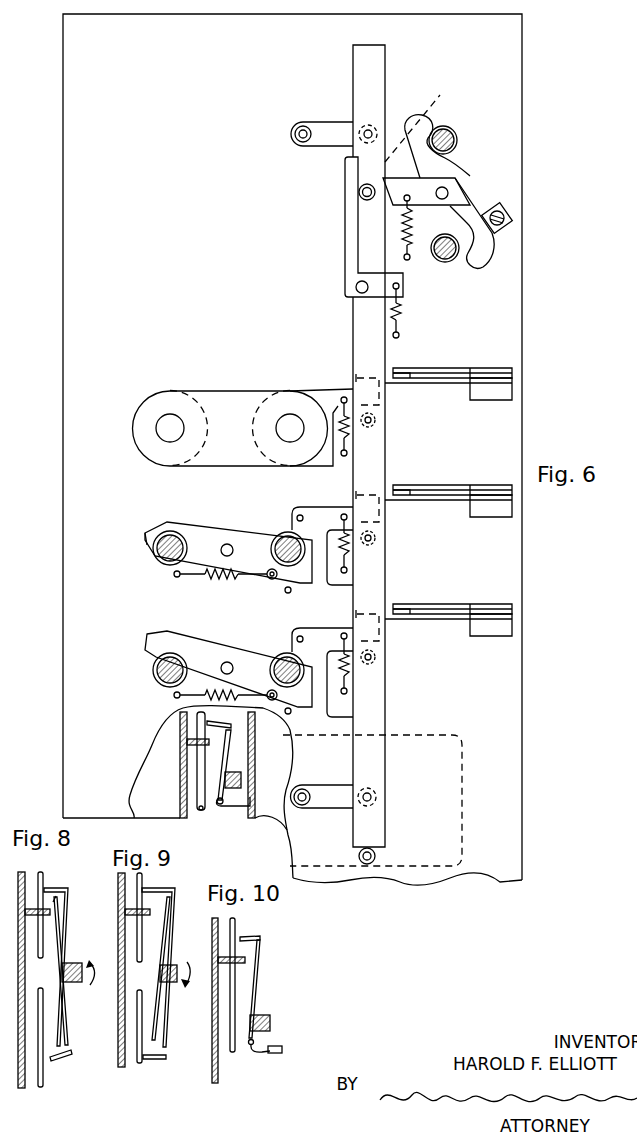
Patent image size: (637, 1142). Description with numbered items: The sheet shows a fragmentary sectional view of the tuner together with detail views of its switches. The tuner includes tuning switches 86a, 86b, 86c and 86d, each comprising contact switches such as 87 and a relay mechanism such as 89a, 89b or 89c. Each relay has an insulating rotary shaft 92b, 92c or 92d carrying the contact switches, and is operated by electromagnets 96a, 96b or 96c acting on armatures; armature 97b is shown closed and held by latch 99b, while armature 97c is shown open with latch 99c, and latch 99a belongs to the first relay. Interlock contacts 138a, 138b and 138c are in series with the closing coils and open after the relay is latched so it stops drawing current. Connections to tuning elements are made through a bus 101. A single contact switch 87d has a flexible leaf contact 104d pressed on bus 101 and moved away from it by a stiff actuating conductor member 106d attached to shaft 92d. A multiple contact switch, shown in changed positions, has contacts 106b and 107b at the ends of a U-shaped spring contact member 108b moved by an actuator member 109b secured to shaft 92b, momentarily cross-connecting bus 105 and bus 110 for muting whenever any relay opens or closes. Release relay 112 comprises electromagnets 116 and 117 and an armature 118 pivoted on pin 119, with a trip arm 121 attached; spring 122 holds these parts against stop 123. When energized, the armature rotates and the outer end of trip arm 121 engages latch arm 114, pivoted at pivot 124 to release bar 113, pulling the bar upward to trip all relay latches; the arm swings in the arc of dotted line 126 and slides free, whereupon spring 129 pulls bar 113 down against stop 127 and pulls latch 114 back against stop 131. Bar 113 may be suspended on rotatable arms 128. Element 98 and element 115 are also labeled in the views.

In FIG. 6, the release bar 113 is at (362, 62).
In FIG. 6, the rotatable arms 128 is at (322, 136).
In FIG. 6, the latch arm 114 is at (347, 167).
In FIG. 6, the stop 131 is at (358, 193).
In FIG. 6, the pivot 124 is at (355, 288).
In FIG. 6, the spring 129 is at (399, 323).
In FIG. 6, the release relay 112 is at (454, 173).
In FIG. 6, the pin 119 is at (448, 192).
In FIG. 6, the spring 122 is at (412, 249).
In FIG. 6, the electromagnet 116 is at (452, 133).
In FIG. 6, the electromagnet 117 is at (445, 262).
In FIG. 6, the trip arm 121 is at (407, 183).
In FIG. 6, the dotted line 126 is at (433, 94).
In FIG. 6, the armature 118 is at (484, 257).
In FIG. 6, the stop 123 is at (510, 220).
In FIG. 6, the electromagnet 96a is at (170, 425).
In FIG. 6, the relay mechanism 89a is at (258, 375).
In FIG. 6, the latch 99a is at (321, 448).
In FIG. 6, the tuning switch 86a is at (395, 432).
In FIG. 6, the interlock contacts 138a is at (452, 386).
In FIG. 6, the armature 97b is at (195, 528).
In FIG. 6, the insulating rotary shaft 92b is at (228, 543).
In FIG. 8, the insulating rotary shaft 92b is at (73, 962).
In FIG. 9, the insulating rotary shaft 92b is at (171, 984).
In FIG. 6, the electromagnet 96b is at (290, 543).
In FIG. 6, the lever end 98 is at (150, 532).
In FIG. 6, the relay mechanism 89b is at (246, 532).
In FIG. 6, the latch 99b is at (317, 563).
In FIG. 6, the tuning switch 86b is at (395, 552).
In FIG. 6, the interlock contacts 138b is at (450, 502).
In FIG. 6, the armature 97c is at (173, 647).
In FIG. 6, the insulating rotary shaft 92c is at (227, 662).
In FIG. 6, the electromagnet 96c is at (287, 662).
In FIG. 6, the relay mechanism 89c is at (240, 640).
In FIG. 6, the latch 99c is at (357, 714).
In FIG. 6, the tuning switch 86c is at (393, 672).
In FIG. 6, the interlock contacts 138c is at (450, 622).
In FIG. 6, the bus 101 is at (201, 812).
In FIG. 10, the bus 101 is at (232, 1054).
In FIG. 6, the flexible leaf contact 104d is at (231, 729).
In FIG. 10, the flexible leaf contact 104d is at (260, 939).
In FIG. 6, the actuating conductor member 106d is at (232, 749).
In FIG. 10, the actuating conductor member 106d is at (258, 955).
In FIG. 6, the insulating rotary shaft 92d is at (233, 790).
In FIG. 10, the insulating rotary shaft 92d is at (271, 1023).
In FIG. 6, the tuning switch 86d is at (238, 787).
In FIG. 6, the contact switch 87 is at (455, 797).
In FIG. 6, the stop 127 is at (372, 864).
In FIG. 8, the bus 110 is at (42, 1090).
In FIG. 9, the bus 110 is at (143, 1063).
In FIG. 8, the bus 105 is at (45, 858).
In FIG. 8, the switch contact 107b is at (70, 1058).
In FIG. 8, the switch contact 106b is at (62, 892).
In FIG. 8, the U-shaped spring contact member 108b is at (67, 1003).
In FIG. 8, the actuator member 109b is at (73, 1040).
In FIG. 9, the tape 115 is at (137, 892).
In FIG. 10, the contact switch 87d is at (257, 976).